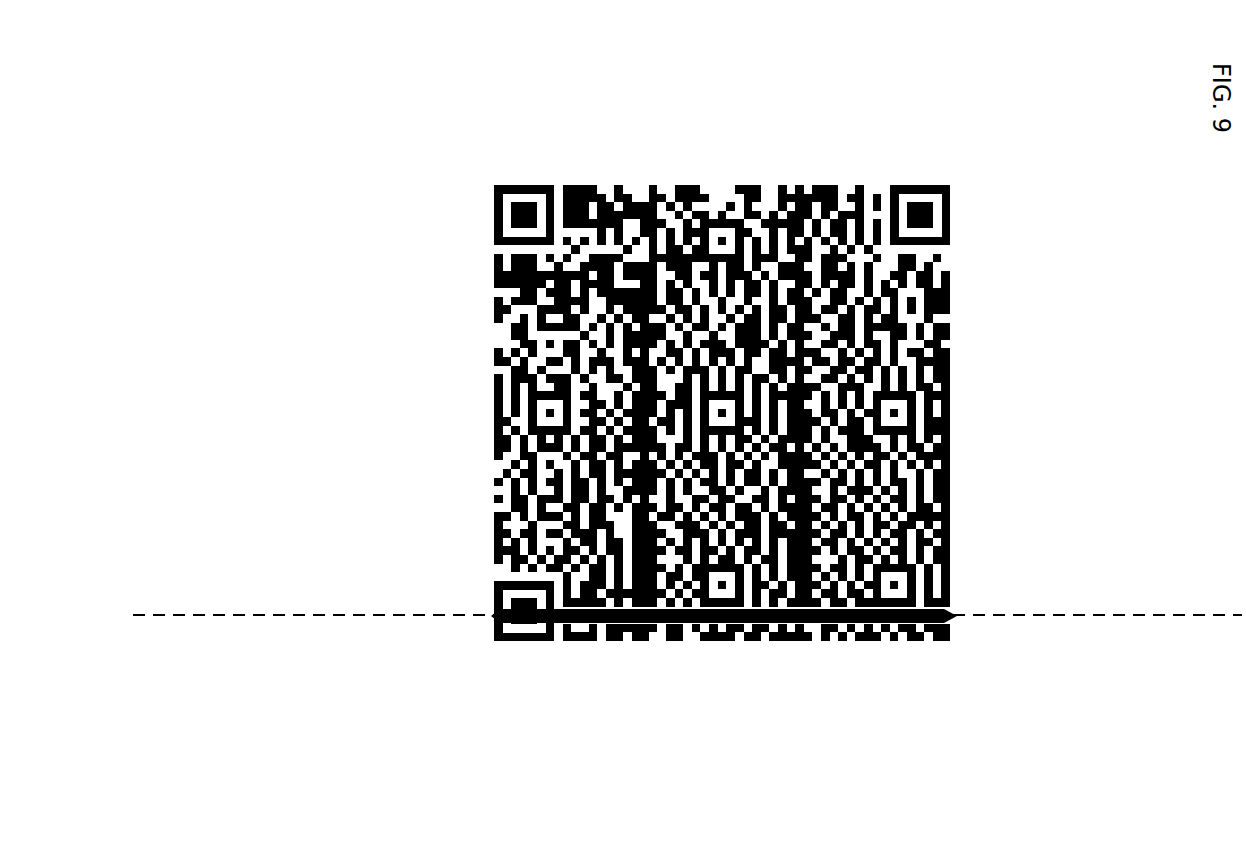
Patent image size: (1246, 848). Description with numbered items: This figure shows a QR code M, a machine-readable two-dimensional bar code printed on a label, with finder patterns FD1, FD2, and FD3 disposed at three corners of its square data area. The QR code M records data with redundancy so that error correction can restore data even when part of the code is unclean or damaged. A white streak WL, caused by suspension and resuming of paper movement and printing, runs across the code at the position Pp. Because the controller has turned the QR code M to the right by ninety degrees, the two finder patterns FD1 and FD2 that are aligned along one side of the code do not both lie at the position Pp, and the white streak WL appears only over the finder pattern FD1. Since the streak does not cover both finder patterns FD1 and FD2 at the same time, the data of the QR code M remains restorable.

The QR code M is at (947, 401).
The finder pattern FD1 is at (520, 643).
The finder pattern FD2 is at (517, 188).
The finder pattern FD3 is at (919, 185).
The white streak WL is at (853, 633).
The position Pp is at (637, 614).